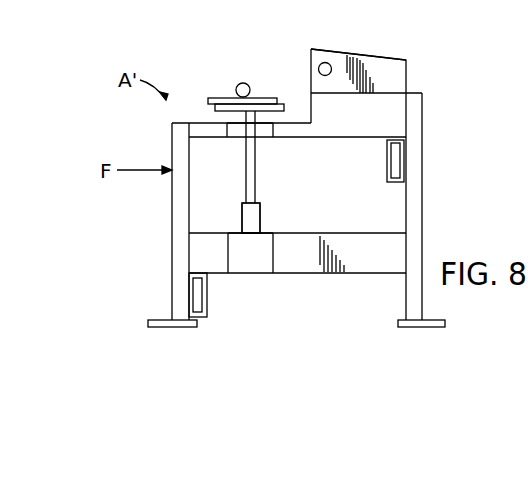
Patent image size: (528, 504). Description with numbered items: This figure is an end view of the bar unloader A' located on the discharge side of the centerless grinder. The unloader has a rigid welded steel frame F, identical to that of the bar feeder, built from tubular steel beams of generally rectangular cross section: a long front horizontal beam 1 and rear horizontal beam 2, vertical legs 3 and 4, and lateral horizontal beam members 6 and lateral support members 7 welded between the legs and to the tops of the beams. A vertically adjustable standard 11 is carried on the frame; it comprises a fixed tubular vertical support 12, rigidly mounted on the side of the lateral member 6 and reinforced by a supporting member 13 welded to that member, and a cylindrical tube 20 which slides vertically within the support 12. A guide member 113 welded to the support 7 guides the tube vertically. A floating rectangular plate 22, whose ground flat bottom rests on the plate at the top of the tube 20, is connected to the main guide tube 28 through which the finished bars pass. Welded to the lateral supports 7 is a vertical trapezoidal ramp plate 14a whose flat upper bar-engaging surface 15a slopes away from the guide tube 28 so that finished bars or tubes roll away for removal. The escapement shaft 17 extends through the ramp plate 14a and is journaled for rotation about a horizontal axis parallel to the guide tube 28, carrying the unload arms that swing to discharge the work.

The front horizontal beam 1 is at (207, 302).
The rear horizontal beam 2 is at (386, 172).
The front leg 3 is at (172, 214).
The vertical leg 4 is at (417, 217).
The lateral horizontal beam member 6 is at (375, 273).
The lateral support member 7 is at (351, 138).
The standard 11 is at (257, 222).
The tubular vertical support 12 is at (242, 210).
The supporting member 13 is at (257, 262).
The ramp plate 14a is at (398, 78).
The upper bar-engaging surface 15a is at (390, 58).
The escapement shaft 17 is at (330, 63).
The cylindrical tube 20 is at (256, 183).
The floating rectangular plate 22 is at (265, 98).
The main guide tube 28 is at (240, 83).
The guide member 113 is at (262, 130).